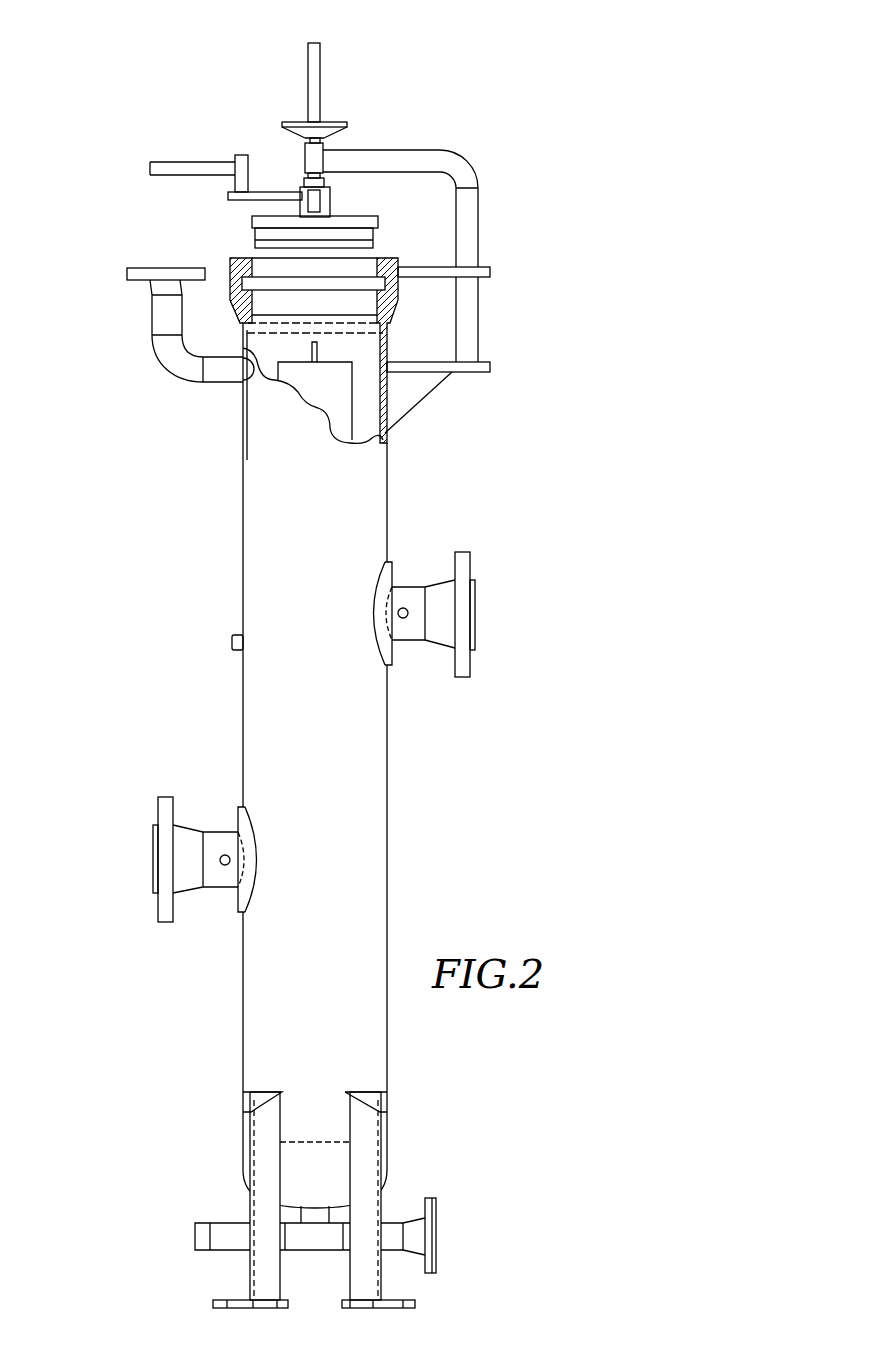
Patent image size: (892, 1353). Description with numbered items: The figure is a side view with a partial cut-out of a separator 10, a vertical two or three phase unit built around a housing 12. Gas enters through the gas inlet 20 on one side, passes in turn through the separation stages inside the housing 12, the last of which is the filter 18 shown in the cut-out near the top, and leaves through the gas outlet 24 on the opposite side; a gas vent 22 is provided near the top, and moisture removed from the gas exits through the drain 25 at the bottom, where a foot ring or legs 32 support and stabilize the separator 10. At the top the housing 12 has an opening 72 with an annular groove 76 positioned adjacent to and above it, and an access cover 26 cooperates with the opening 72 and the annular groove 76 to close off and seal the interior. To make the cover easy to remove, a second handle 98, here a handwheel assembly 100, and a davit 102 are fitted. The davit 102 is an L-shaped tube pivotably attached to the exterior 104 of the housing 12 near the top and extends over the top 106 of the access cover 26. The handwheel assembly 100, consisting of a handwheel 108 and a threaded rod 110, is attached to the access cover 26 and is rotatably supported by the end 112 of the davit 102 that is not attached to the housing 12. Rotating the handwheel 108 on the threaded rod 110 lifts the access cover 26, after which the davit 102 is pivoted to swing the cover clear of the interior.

The separator 10 is at (490, 95).
The housing 12 is at (237, 500).
The filter 18 is at (355, 372).
The gas inlet 20 is at (152, 848).
The gas vent 22 is at (153, 262).
The gas outlet 24 is at (478, 600).
The drain 25 is at (443, 1202).
The access cover 26 is at (231, 209).
The legs 32 is at (223, 1297).
The opening 72 is at (330, 296).
The annular groove 76 is at (367, 283).
The second handle 98 is at (330, 115).
The handwheel assembly 100 is at (315, 140).
The davit 102 is at (480, 197).
The exterior 104 is at (392, 396).
The top 106 is at (357, 218).
The handwheel 108 is at (288, 120).
The threaded rod 110 is at (310, 42).
The end 112 is at (303, 158).